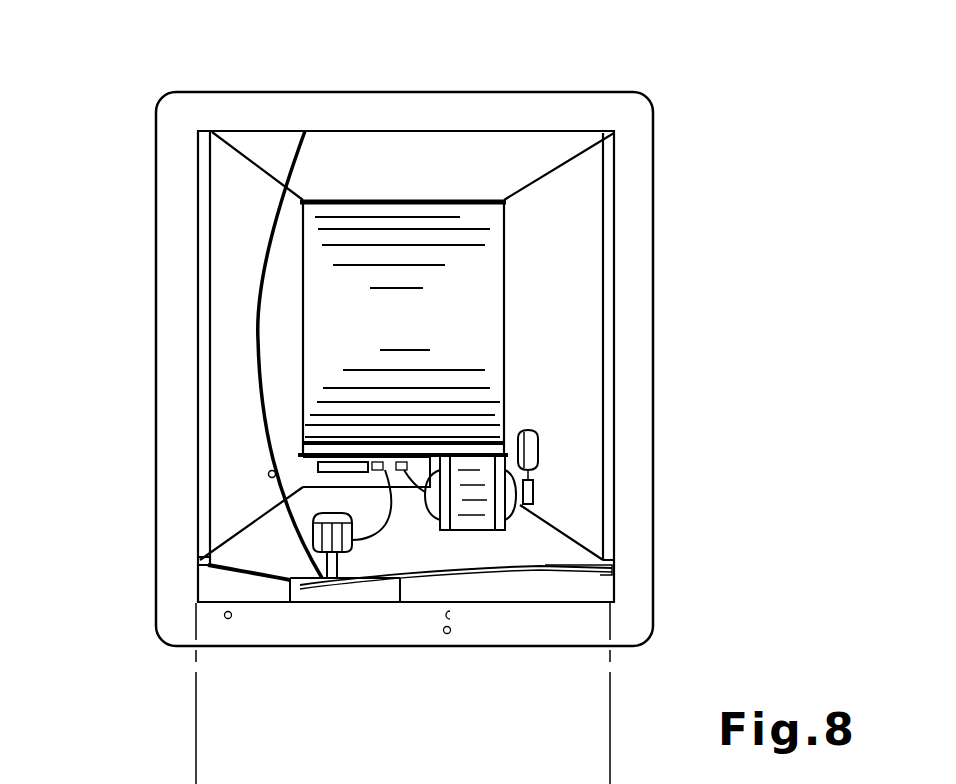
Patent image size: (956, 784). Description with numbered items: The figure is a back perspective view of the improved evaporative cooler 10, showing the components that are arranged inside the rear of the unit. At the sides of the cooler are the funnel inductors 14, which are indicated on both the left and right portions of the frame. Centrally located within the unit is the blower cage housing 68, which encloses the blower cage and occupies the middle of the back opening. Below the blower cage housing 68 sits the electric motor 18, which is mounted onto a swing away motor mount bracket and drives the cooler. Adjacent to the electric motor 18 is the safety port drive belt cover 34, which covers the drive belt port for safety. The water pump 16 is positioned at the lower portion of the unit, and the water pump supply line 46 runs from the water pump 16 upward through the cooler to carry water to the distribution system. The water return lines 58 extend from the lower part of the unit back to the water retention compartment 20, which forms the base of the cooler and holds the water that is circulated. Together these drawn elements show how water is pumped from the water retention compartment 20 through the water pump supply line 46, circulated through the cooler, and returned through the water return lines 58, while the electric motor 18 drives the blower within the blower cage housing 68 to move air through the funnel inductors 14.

The improved evaporative cooler 10 is at (634, 92).
The funnel inductors 14 is at (246, 466).
The water pump 16 is at (316, 540).
The electric motor 18 is at (470, 530).
The water retention compartment 20 is at (362, 580).
The safety port drive belt cover 34 is at (538, 450).
The water pump supply line 46 is at (292, 190).
The water return lines 58 is at (237, 570).
The blower cage housing 68 is at (450, 325).